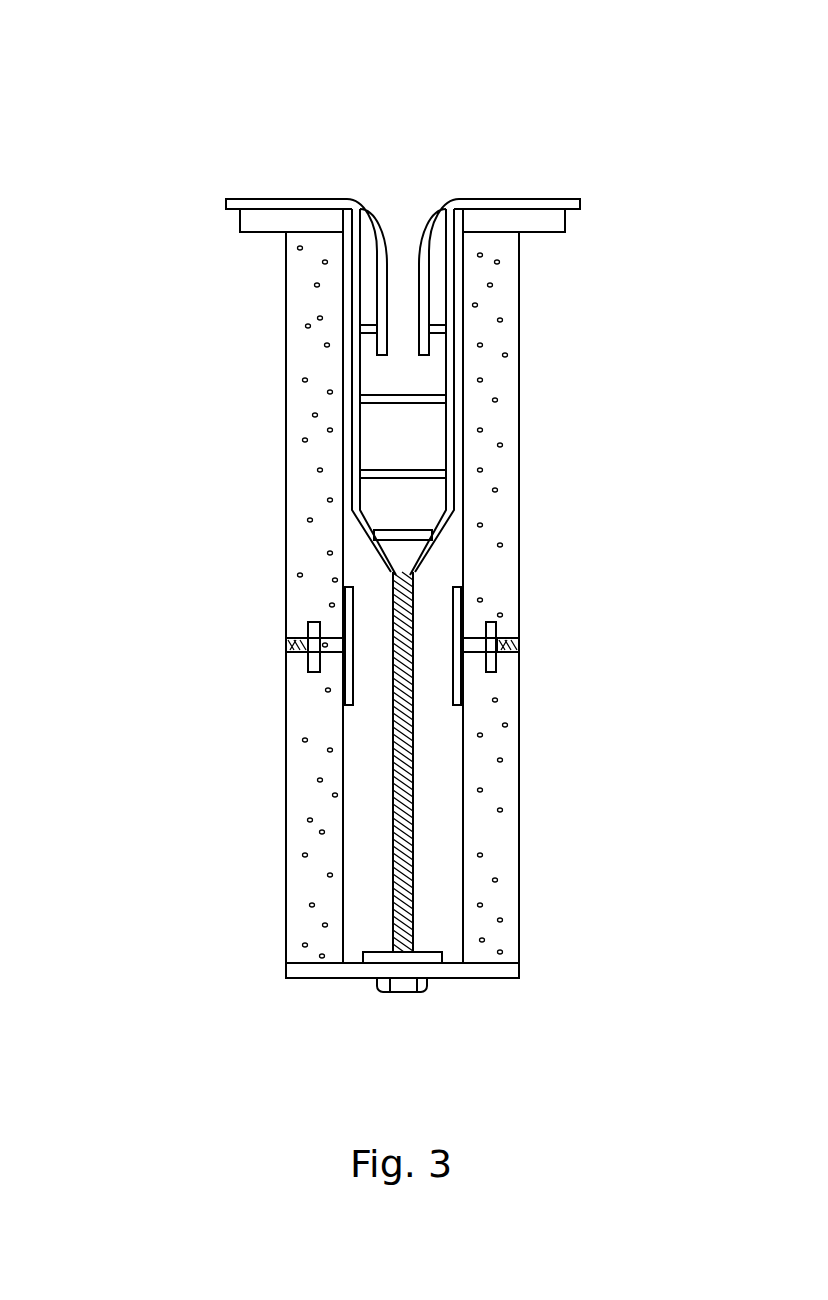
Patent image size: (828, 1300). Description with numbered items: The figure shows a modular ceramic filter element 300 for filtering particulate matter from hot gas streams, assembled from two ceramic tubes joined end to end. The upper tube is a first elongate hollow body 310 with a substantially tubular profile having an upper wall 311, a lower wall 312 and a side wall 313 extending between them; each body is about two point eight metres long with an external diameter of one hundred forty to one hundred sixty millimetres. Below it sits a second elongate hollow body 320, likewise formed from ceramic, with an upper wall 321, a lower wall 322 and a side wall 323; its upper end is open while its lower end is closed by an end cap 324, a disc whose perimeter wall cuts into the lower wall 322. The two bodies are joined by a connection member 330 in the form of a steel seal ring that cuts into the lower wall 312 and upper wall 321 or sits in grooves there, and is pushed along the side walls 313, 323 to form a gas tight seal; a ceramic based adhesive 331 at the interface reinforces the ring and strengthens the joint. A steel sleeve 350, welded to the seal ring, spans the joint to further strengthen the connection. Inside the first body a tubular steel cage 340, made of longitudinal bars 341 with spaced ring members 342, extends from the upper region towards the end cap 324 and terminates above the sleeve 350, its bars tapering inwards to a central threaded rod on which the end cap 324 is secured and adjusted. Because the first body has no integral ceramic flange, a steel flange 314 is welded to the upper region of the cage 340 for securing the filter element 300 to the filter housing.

The modular filter element 300 is at (165, 117).
The first elongate hollow body 310 is at (537, 435).
The upper wall 311 is at (528, 215).
The lower wall 312 is at (333, 632).
The side wall 313 is at (520, 344).
The steel flange 314 is at (538, 201).
The second elongate hollow body 320 is at (525, 780).
The upper wall 321 is at (510, 658).
The lower wall 322 is at (497, 960).
The side wall 323 is at (285, 830).
The end cap 324 is at (305, 968).
The connection member 330 is at (493, 632).
The ceramic based adhesive 331 is at (288, 645).
The tubular steel cage 340 is at (406, 360).
The longitudinal bars 341 is at (358, 306).
The ring members 342 is at (420, 398).
The steel sleeve 350 is at (353, 690).